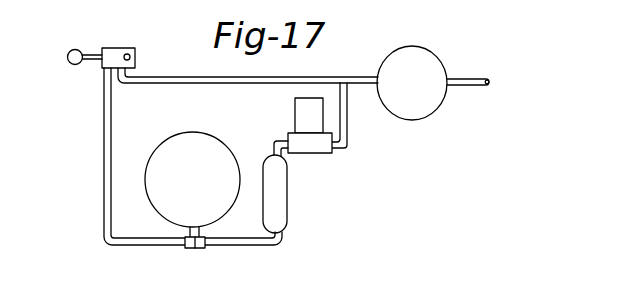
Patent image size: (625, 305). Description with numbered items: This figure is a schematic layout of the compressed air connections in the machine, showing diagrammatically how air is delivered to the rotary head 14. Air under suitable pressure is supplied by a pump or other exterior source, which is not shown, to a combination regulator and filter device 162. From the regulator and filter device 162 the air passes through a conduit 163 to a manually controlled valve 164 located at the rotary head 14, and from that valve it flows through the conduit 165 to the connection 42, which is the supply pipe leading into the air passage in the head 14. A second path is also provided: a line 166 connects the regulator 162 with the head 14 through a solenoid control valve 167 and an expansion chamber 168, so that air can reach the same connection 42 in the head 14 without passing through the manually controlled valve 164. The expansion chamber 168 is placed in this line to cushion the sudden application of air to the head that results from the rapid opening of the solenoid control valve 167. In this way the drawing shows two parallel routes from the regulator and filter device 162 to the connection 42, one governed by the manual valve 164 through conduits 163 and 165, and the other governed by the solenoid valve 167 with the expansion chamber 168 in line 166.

The rotary head 14 is at (217, 136).
The supply pipe 42 is at (192, 248).
The combination regulator and filter device 162 is at (434, 107).
The conduit 163 is at (206, 78).
The manually controlled valve 164 is at (100, 66).
The conduit 165 is at (104, 200).
The line 166 is at (347, 137).
The solenoid control valve 167 is at (312, 153).
The expansion chamber 168 is at (287, 228).